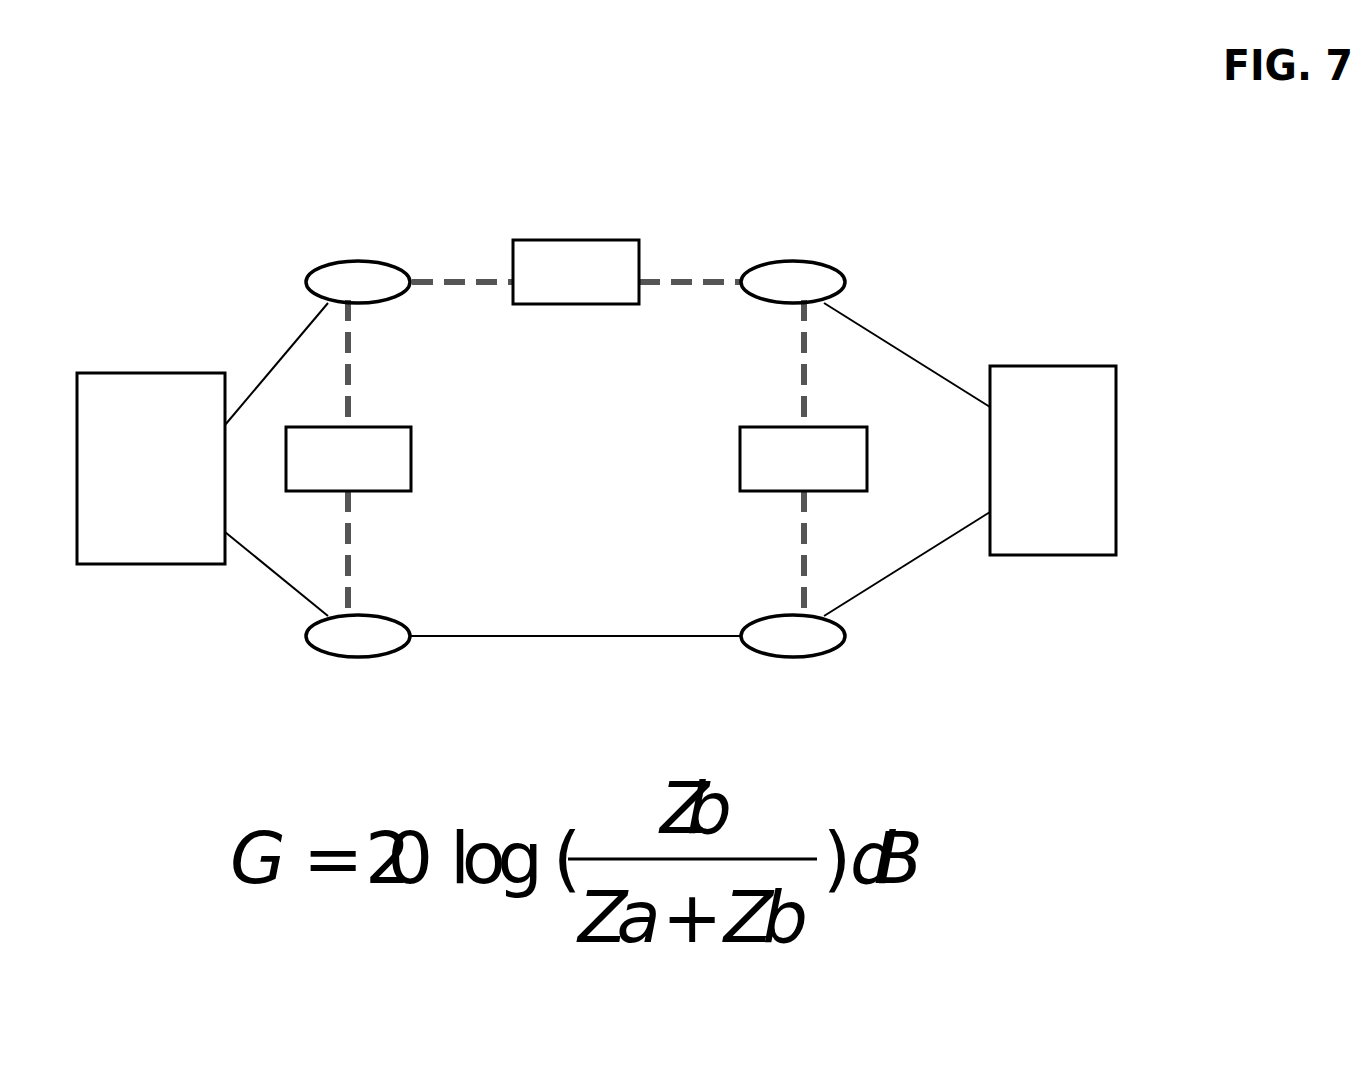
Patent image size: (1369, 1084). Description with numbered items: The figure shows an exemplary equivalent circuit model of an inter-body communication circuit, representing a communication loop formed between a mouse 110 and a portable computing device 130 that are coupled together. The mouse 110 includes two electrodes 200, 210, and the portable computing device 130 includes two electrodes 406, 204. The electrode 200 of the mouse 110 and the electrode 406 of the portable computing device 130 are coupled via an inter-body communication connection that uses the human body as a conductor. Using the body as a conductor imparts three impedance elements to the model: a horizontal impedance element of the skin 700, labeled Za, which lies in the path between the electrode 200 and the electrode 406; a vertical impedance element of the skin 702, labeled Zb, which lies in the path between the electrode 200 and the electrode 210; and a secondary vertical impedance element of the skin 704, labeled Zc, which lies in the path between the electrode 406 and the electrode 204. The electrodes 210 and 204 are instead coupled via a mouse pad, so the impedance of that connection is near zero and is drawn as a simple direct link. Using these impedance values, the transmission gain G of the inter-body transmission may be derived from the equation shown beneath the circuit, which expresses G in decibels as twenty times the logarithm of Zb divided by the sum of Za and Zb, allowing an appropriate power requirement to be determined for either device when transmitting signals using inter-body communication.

The mouse 110 is at (151, 433).
The portable computing device 130 is at (1053, 424).
The electrode 200 is at (352, 246).
The electrode 210 is at (352, 672).
The electrode 204 is at (796, 672).
The electrode 406 is at (797, 246).
The horizontal impedance element of the skin (Za) 700 is at (604, 237).
The vertical impedance element of the skin (Zb) 702 is at (382, 423).
The secondary vertical impedance element of the skin (Zc) 704 is at (770, 423).